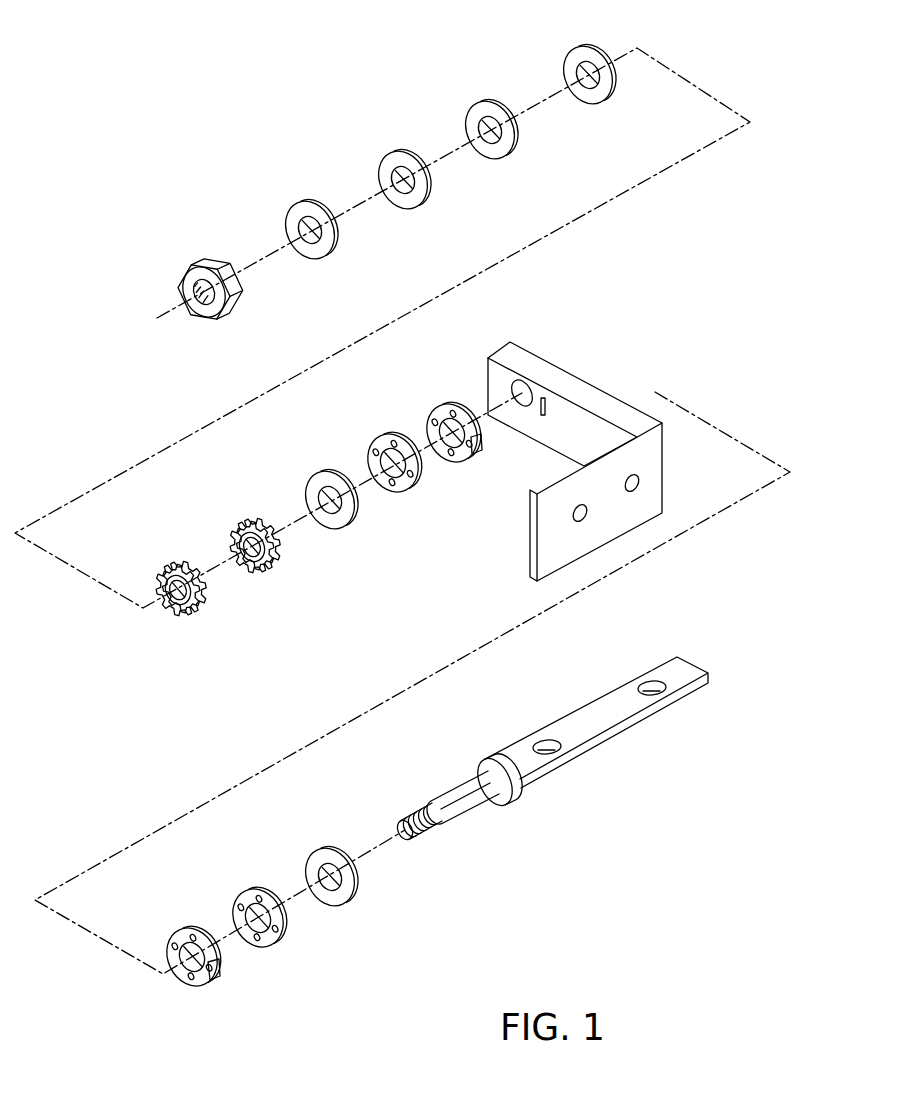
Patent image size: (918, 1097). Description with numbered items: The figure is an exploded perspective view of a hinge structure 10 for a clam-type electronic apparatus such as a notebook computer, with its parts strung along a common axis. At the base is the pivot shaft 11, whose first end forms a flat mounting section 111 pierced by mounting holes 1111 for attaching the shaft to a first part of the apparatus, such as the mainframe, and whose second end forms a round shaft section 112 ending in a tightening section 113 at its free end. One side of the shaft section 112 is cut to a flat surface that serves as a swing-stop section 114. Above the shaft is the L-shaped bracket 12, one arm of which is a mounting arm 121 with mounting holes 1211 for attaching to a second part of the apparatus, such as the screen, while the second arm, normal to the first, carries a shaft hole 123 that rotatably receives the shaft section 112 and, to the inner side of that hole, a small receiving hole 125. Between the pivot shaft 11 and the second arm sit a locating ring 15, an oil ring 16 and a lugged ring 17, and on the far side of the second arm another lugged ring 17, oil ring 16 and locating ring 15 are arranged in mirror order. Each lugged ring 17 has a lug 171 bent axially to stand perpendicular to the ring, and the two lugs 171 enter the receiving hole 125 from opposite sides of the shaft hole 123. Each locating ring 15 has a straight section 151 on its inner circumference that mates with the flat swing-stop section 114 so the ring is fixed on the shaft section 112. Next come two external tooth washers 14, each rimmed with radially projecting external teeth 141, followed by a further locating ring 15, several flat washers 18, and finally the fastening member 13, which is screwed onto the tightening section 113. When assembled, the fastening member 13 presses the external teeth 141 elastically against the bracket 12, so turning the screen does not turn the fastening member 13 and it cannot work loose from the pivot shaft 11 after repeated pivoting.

The hinge structure 10 is at (198, 128).
The pivot shaft 11 is at (630, 757).
The mounting section 111 is at (603, 713).
The mounting hole 1111 is at (543, 747).
The shaft section 112 is at (477, 803).
The tightening section 113 is at (433, 833).
The swing-stop section 114 is at (463, 797).
The bracket 12 is at (565, 353).
The mounting arm 121 is at (622, 510).
The mounting hole 1211 is at (640, 483).
The shaft hole 123 is at (512, 390).
The receiving hole 125 is at (550, 408).
The fastening member 13 is at (213, 257).
The external tooth washer 14 is at (213, 613).
The external teeth 141 is at (228, 525).
The locating ring 15 is at (598, 93).
The straight section 151 is at (582, 72).
The oil ring 16 is at (403, 492).
The lugged ring 17 is at (435, 415).
The lug 171 is at (483, 452).
The flat washer 18 is at (317, 253).